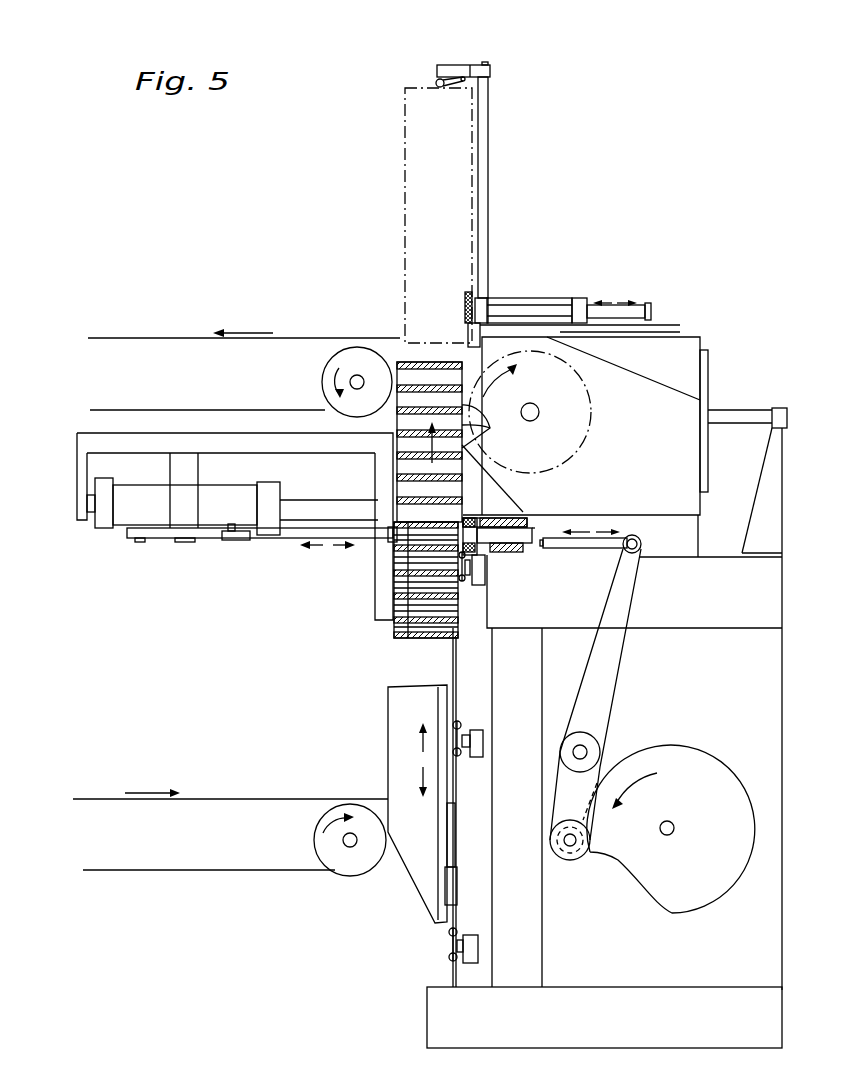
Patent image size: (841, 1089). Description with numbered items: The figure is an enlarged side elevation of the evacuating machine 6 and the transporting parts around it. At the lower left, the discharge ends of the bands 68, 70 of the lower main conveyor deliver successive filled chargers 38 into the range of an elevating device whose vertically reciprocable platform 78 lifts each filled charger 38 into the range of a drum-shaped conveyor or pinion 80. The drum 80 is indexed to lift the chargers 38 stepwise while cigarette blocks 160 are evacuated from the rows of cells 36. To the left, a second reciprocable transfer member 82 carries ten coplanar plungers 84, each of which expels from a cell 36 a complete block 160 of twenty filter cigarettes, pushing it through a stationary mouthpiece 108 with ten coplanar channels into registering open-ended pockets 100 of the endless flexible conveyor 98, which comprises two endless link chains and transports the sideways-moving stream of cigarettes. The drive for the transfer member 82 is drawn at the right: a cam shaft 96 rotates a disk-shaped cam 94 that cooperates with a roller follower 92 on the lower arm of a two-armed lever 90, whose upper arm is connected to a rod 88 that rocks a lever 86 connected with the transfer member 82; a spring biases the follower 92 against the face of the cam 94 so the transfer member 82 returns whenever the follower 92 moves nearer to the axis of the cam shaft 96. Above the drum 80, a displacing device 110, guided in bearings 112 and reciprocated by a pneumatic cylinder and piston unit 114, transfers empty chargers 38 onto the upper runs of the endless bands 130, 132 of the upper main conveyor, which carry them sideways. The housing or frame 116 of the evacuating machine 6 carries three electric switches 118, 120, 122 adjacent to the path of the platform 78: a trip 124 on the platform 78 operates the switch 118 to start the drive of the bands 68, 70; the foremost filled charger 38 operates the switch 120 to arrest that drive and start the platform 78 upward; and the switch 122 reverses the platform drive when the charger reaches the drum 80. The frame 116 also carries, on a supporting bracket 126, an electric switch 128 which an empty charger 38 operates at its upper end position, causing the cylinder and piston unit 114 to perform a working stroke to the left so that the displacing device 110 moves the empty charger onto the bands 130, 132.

The evacuating machine 6 is at (288, 652).
The cell 36 is at (489, 426).
The charger 38 is at (380, 431).
The band 68 is at (228, 799).
The band 70 is at (230, 823).
The vertically reciprocable conveyor or platform 78 is at (390, 687).
The drum-shaped conveyor or pinion 80 is at (597, 418).
The second reciprocable transfer member 82 is at (270, 522).
The plunger 84 is at (390, 543).
The lever 86 is at (157, 540).
The rod 88 is at (244, 541).
The two-armed lever 90 is at (618, 674).
The roller follower 92 is at (570, 860).
The disk-shaped cam 94 is at (652, 865).
The cam shaft 96 is at (667, 821).
The endless flexible conveyor 98 is at (529, 558).
The open-ended pocket 100 is at (518, 528).
The stationary mouthpiece 108 is at (485, 518).
The displacing conveyor or device 110 is at (465, 298).
The bearing 112 is at (580, 298).
The pneumatic cylinder and piston unit 114 is at (505, 298).
The housing or frame 116 is at (478, 790).
The electric switch 118 is at (450, 940).
The electric switch 120 is at (483, 740).
The electric switch 122 is at (484, 576).
The actuating member or trip 124 is at (452, 895).
The supporting bracket 126 is at (488, 178).
The electric switch 128 is at (453, 68).
The endless band 130 is at (178, 338).
The endless band 132 is at (244, 354).
The cigarette block 160 is at (394, 566).